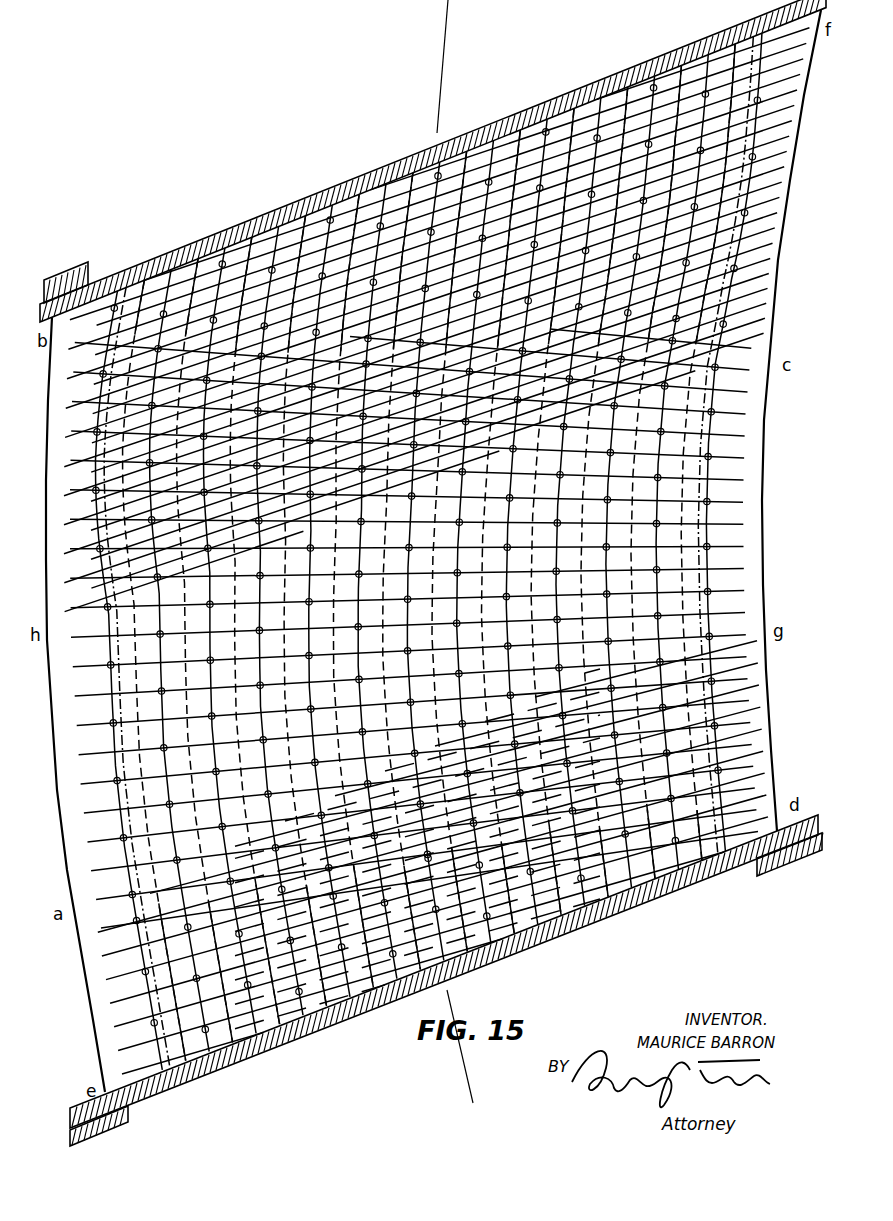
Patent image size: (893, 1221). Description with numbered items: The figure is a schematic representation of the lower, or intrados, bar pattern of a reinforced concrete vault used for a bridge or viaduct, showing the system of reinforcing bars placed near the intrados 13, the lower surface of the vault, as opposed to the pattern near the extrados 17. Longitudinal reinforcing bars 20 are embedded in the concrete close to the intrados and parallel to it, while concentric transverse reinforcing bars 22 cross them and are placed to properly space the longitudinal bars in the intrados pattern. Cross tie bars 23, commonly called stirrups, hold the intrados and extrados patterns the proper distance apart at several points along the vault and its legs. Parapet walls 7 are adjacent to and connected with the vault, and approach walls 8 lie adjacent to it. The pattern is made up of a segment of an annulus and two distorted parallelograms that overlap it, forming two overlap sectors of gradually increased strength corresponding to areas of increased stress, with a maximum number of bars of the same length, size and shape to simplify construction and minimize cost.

The parapet walls 7 is at (541, 121).
The approach walls 8 is at (66, 283).
The intrados 13 is at (702, 860).
The extrados 17 is at (768, 490).
The longitudinal reinforcing bars 20 is at (222, 302).
The concentric transverse reinforcing bars 22 is at (629, 207).
The cross tie bars 23 is at (688, 158).